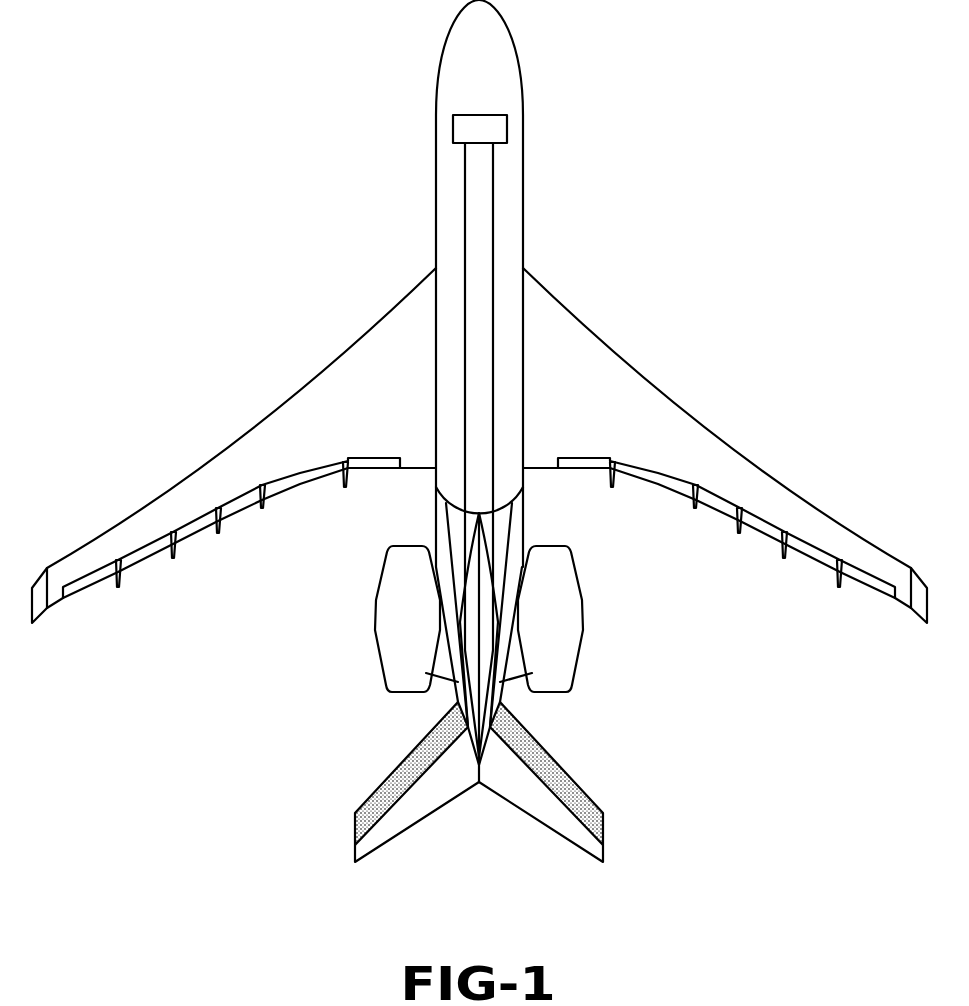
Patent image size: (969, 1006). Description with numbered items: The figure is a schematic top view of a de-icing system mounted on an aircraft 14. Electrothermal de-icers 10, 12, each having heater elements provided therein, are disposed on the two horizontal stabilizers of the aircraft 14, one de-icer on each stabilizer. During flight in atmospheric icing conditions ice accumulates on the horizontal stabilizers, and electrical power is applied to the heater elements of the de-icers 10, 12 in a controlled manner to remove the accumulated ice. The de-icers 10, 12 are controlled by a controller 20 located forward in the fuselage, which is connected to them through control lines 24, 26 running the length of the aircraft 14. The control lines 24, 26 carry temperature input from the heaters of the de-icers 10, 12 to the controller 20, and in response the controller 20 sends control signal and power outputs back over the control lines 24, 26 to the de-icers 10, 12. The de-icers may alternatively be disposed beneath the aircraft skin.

The electrothermal de-icer 10 is at (403, 783).
The electrothermal de-icer 12 is at (553, 782).
The aircraft 14 is at (590, 370).
The controller 20 is at (513, 127).
The control line 24 is at (492, 208).
The control line 26 is at (466, 208).